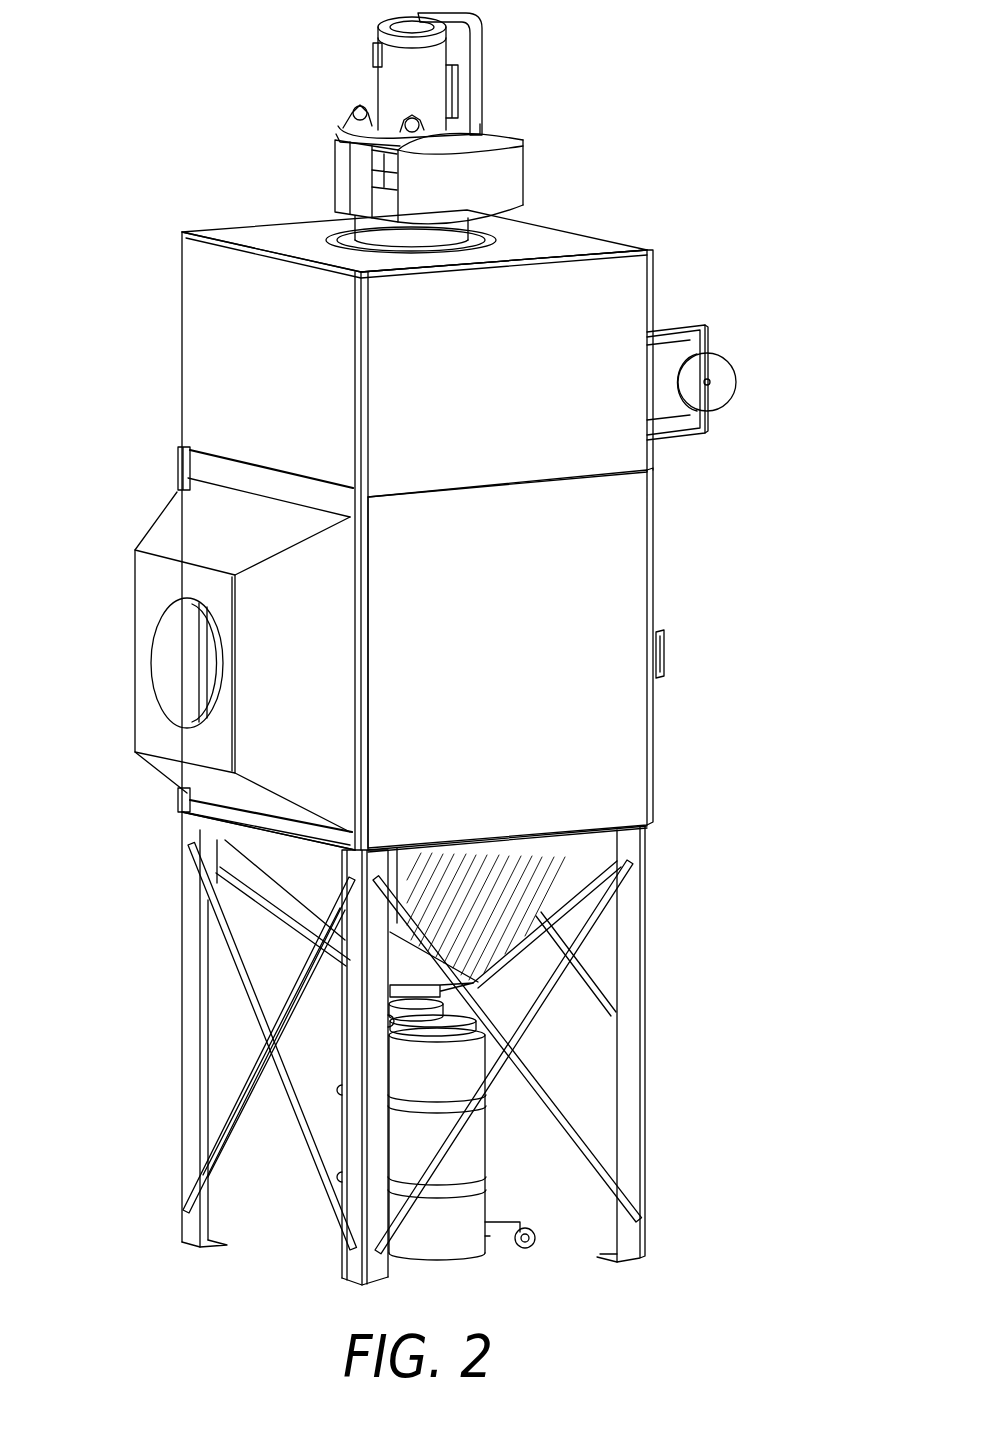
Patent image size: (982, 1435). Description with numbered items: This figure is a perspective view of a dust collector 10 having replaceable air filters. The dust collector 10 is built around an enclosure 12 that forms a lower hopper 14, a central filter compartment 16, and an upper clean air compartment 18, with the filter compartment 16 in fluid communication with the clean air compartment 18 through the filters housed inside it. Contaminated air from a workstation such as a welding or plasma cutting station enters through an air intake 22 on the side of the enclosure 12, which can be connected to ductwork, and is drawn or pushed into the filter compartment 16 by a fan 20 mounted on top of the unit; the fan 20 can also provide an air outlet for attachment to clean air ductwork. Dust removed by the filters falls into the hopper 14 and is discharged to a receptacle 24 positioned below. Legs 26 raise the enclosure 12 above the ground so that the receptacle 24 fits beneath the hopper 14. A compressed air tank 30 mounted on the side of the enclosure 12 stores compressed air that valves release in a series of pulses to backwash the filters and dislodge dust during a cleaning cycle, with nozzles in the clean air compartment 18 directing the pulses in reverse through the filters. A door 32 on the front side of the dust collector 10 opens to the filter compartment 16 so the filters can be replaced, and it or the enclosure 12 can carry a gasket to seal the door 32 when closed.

The dust collector 10 is at (700, 246).
The enclosure 12 is at (182, 318).
The hopper 14 is at (533, 893).
The filter compartment 16 is at (567, 833).
The clean air compartment 18 is at (648, 297).
The fan 20 is at (523, 160).
The air intake 22 is at (134, 612).
The receptacle 24 is at (463, 1256).
The legs 26 is at (645, 1090).
The compressed air tank 30 is at (737, 381).
The door 32 is at (654, 749).